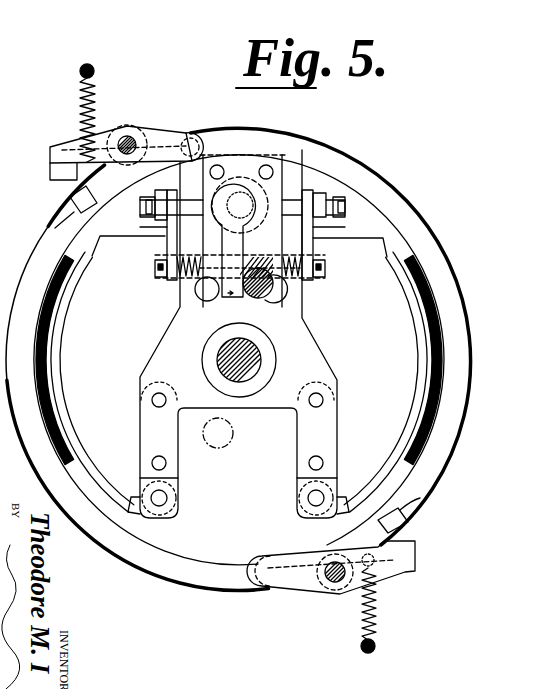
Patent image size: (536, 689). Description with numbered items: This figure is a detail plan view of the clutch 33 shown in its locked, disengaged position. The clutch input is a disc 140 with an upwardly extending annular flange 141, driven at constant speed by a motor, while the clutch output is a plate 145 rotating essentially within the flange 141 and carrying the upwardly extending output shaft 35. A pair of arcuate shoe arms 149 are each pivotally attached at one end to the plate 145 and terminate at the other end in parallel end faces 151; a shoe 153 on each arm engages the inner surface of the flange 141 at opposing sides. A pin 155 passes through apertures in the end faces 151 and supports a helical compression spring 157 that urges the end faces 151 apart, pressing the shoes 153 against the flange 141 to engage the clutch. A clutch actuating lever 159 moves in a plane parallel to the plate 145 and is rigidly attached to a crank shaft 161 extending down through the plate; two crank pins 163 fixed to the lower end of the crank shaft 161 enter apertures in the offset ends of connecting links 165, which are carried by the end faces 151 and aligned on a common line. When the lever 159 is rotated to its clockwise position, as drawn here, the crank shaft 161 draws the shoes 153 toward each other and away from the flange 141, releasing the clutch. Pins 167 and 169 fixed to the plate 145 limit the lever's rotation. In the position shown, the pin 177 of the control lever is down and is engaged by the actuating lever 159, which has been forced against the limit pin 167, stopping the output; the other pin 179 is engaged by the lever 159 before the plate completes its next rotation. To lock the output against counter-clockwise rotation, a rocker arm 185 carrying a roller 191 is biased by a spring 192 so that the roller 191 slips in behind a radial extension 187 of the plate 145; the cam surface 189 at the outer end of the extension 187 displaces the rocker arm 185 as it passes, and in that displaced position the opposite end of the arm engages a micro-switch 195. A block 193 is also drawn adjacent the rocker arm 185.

The clutch 33 is at (465, 262).
The output shaft 35 is at (258, 360).
The disc 140 is at (200, 543).
The annular flange 141 is at (441, 468).
The plate 145 is at (170, 354).
The arcuate shoe arms 149 is at (58, 395).
The end faces 151 is at (167, 183).
The shoe 153 is at (80, 462).
The pin 155 is at (326, 268).
The helical compression spring 157 is at (173, 286).
The clutch actuating lever 159 is at (167, 256).
The crank shaft 161 is at (262, 208).
The crank pins 163 is at (301, 138).
The connecting link 165 is at (155, 233).
The limit pin 167 is at (196, 291).
The limit pin 169 is at (284, 294).
The pin 177 is at (303, 323).
The pin 179 is at (230, 449).
The rocker arm 185 is at (58, 144).
The radial extension 187 is at (231, 163).
The cam surface 189 is at (257, 182).
The roller 191 is at (213, 118).
The spring 192 is at (83, 88).
The stop block 193 is at (72, 202).
The micro-switch 195 is at (408, 523).